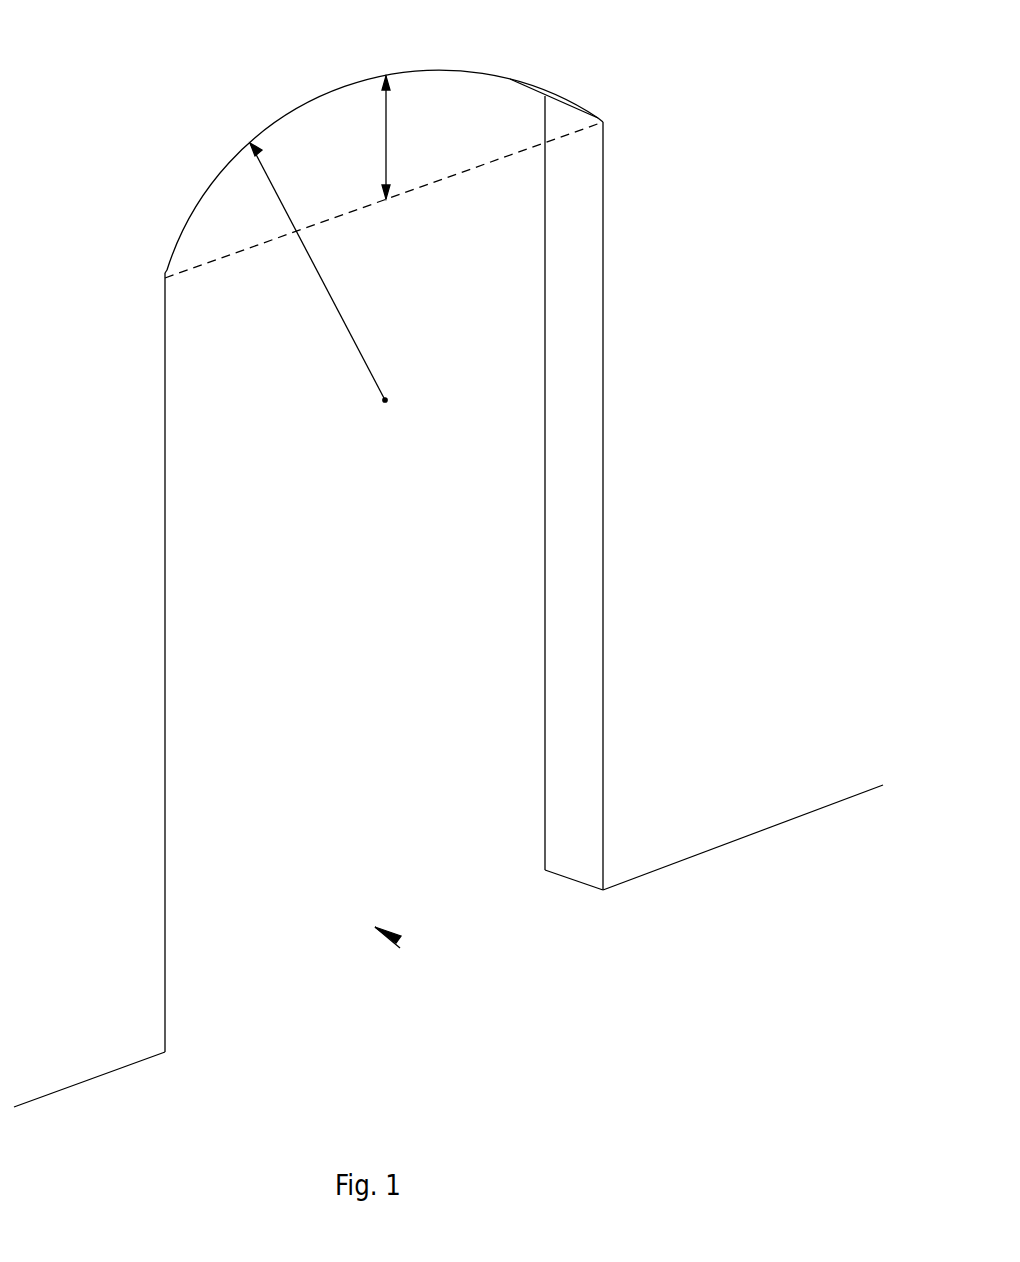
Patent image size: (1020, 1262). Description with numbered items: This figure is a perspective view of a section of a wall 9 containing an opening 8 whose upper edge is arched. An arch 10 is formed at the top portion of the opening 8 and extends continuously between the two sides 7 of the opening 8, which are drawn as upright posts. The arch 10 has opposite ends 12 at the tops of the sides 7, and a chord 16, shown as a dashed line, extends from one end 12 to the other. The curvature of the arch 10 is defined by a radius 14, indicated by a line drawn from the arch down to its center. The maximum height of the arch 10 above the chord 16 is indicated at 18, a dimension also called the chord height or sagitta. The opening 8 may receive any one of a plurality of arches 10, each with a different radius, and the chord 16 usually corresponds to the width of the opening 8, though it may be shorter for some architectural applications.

The sides of the opening 7 is at (165, 705).
The opening 8 is at (400, 948).
The wall 9 is at (70, 828).
The arch 10 is at (282, 117).
The ends of the arch 12 is at (167, 268).
The radius of the arch 14 is at (370, 370).
The chord 16 is at (437, 185).
The maximum arch height above the chord 18 is at (393, 147).